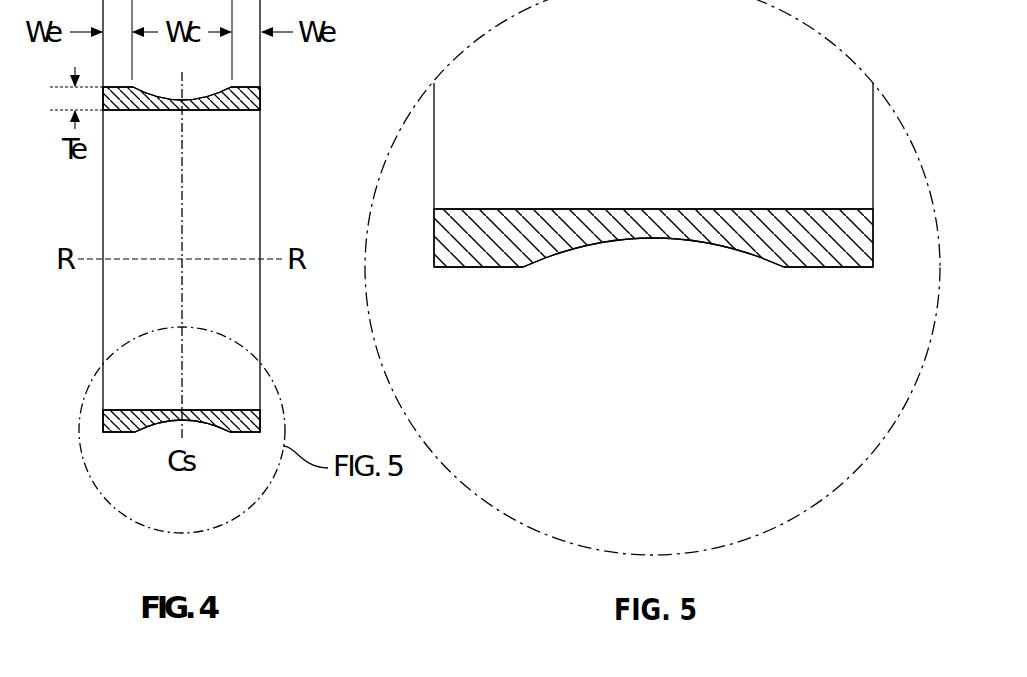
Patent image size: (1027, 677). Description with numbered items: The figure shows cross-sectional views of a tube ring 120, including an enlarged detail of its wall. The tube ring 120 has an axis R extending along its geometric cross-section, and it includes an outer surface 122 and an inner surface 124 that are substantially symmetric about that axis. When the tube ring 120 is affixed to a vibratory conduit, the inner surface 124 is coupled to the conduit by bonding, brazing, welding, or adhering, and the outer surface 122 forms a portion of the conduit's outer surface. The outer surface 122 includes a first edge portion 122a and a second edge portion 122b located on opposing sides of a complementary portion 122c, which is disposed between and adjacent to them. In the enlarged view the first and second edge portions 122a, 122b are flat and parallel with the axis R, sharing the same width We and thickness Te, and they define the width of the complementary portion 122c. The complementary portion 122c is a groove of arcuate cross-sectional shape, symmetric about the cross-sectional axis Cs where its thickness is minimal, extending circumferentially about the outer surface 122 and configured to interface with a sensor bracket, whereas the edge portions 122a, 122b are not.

In FIG. 4, the tube ring 120 is at (279, 120).
In FIG. 5, the outer surface 122 is at (641, 303).
In FIG. 5, the first edge portion 122a is at (473, 268).
In FIG. 5, the second edge portion 122b is at (807, 268).
In FIG. 5, the complementary portion 122c is at (698, 246).
In FIG. 5, the inner surface 124 is at (636, 207).